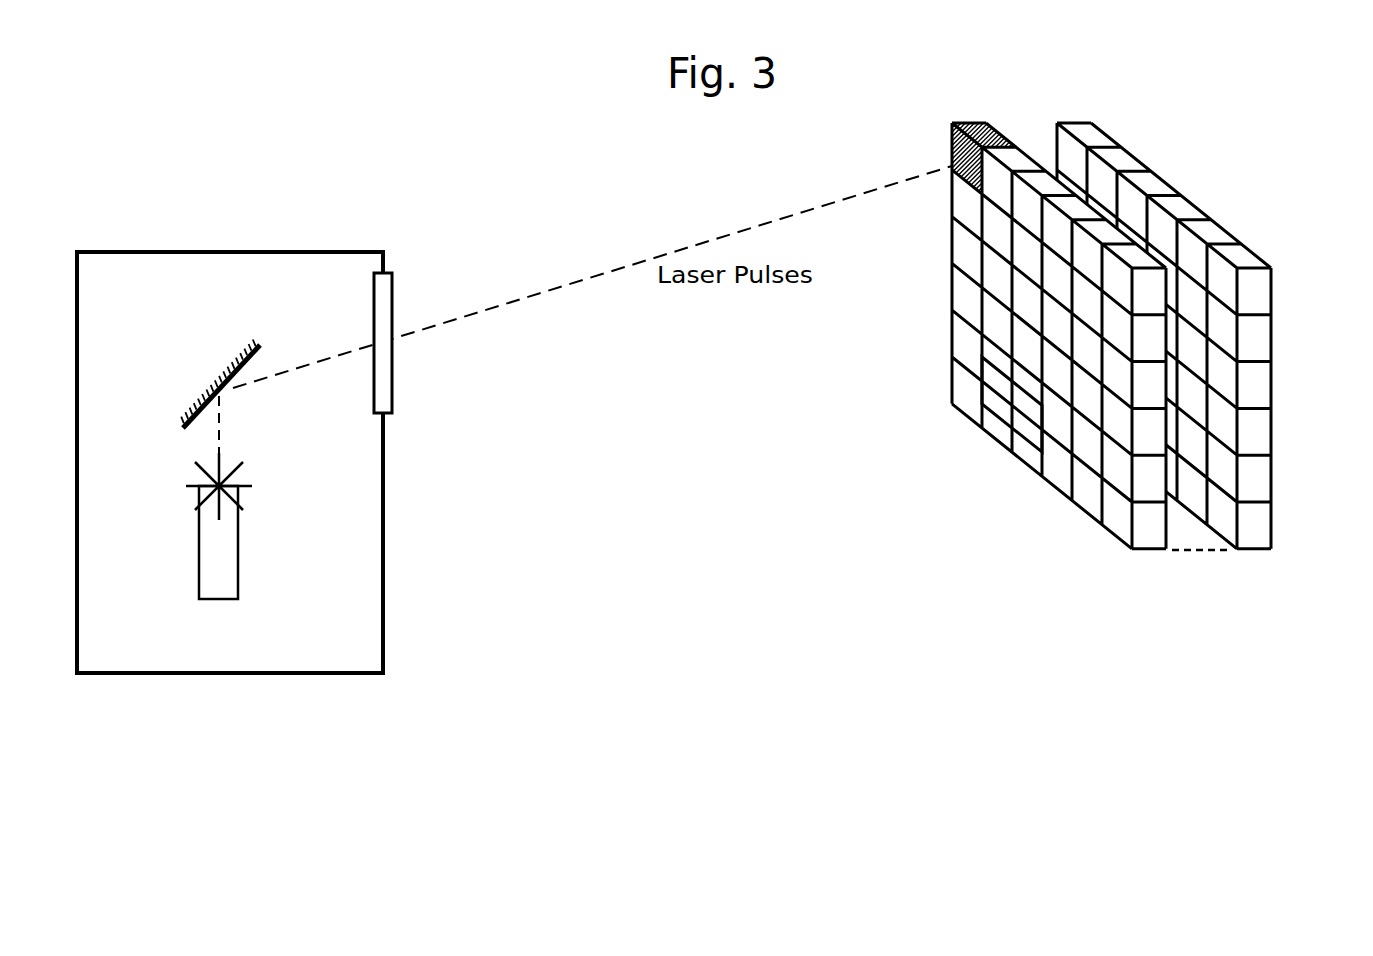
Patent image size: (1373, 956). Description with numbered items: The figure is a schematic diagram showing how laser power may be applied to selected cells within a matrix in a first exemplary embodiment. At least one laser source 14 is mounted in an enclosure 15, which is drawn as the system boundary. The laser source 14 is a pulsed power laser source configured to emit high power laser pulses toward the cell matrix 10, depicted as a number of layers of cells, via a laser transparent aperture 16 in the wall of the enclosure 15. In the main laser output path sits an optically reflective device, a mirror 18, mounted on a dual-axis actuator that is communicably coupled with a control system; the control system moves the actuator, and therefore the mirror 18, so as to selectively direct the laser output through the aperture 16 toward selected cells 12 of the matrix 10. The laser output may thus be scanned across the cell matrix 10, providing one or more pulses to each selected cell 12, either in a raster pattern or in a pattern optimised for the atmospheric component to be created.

The cell matrix 10 is at (1264, 243).
The selected cells 12 is at (1029, 445).
The laser source 14 is at (228, 549).
The enclosure 15 is at (385, 574).
The laser transparent aperture 16 is at (383, 302).
The mirror 18 is at (232, 362).